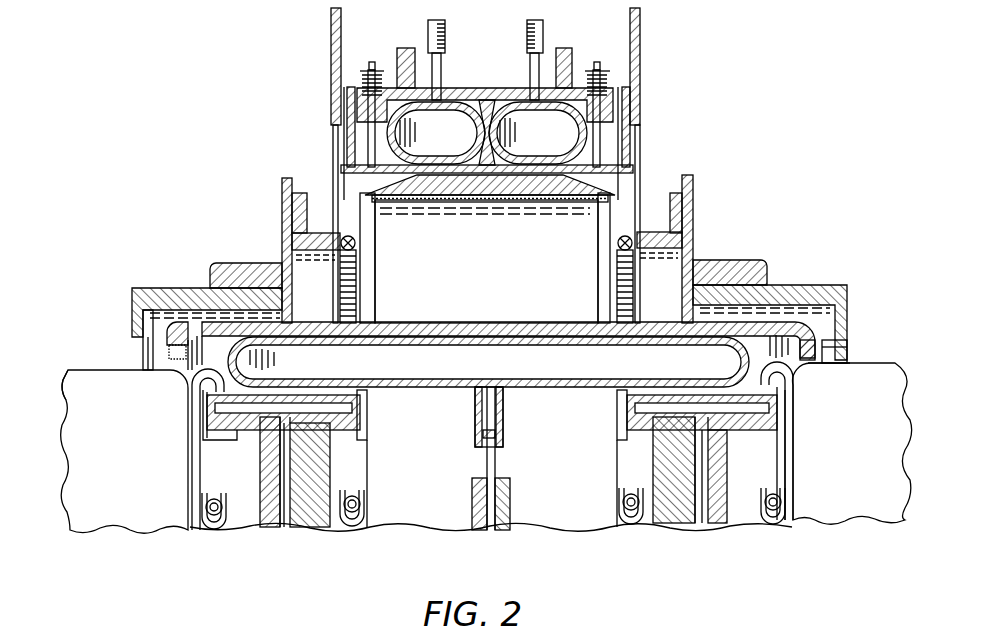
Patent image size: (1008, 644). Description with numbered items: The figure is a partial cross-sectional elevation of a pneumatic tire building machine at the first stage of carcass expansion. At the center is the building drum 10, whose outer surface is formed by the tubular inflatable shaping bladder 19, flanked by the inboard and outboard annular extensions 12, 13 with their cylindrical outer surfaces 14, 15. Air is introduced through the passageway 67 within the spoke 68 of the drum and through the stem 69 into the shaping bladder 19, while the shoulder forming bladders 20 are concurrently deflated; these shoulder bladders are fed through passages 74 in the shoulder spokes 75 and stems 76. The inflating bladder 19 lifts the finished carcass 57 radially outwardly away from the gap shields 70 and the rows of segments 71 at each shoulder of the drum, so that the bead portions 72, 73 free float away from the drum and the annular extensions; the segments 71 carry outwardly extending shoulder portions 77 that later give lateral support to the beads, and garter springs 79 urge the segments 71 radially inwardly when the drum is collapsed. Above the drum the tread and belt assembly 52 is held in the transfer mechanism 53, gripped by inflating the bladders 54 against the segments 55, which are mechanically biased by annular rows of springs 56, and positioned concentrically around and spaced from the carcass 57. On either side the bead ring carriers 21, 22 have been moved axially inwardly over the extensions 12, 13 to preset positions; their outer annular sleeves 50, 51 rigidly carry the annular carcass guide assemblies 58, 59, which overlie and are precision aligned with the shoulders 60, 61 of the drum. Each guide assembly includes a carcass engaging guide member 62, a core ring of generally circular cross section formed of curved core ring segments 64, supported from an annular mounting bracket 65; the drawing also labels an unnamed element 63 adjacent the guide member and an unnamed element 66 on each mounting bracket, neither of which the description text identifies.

The building drum 10 is at (459, 534).
The inboard annular extension 12 is at (877, 461).
The outboard annular extension 13 is at (129, 469).
The cylindrical outer surface 14 is at (850, 360).
The cylindrical outer surface 15 is at (70, 370).
The shaping bladder 19 is at (530, 340).
The shoulder forming bladders 20 is at (365, 415).
The bead ring carrier 21 is at (850, 352).
The bead ring carrier 22 is at (147, 365).
The outer annular sleeve 50 is at (800, 285).
The outer annular sleeve 51 is at (166, 288).
The tread and belt assembly 52 is at (620, 188).
The transfer mechanism 53 is at (641, 113).
The bladders 54 is at (516, 100).
The segments 55 is at (640, 170).
The springs 56 is at (372, 68).
The carcass 57 is at (478, 323).
The annular carcass guide assembly 58 is at (699, 181).
The annular carcass guide assembly 59 is at (276, 189).
The shoulder 60 is at (793, 400).
The shoulder 61 is at (203, 420).
The carcass engaging guide member 62 is at (368, 293).
The spring 63 is at (358, 255).
The curved core ring segments 64 is at (357, 243).
The annular mounting bracket 65 is at (298, 193).
The block 66 is at (252, 262).
The passageway 67 is at (488, 530).
The spoke 68 is at (500, 530).
The stem 69 is at (493, 400).
The gap shields 70 is at (438, 378).
The segments 71 is at (350, 375).
The bead portion 72 is at (814, 345).
The bead portion 73 is at (170, 332).
The passages 74 is at (284, 528).
The shoulder spokes 75 is at (320, 528).
The stems 76 is at (262, 448).
The outwardly extending shoulder portions 77 is at (200, 380).
The garter springs 79 is at (203, 500).